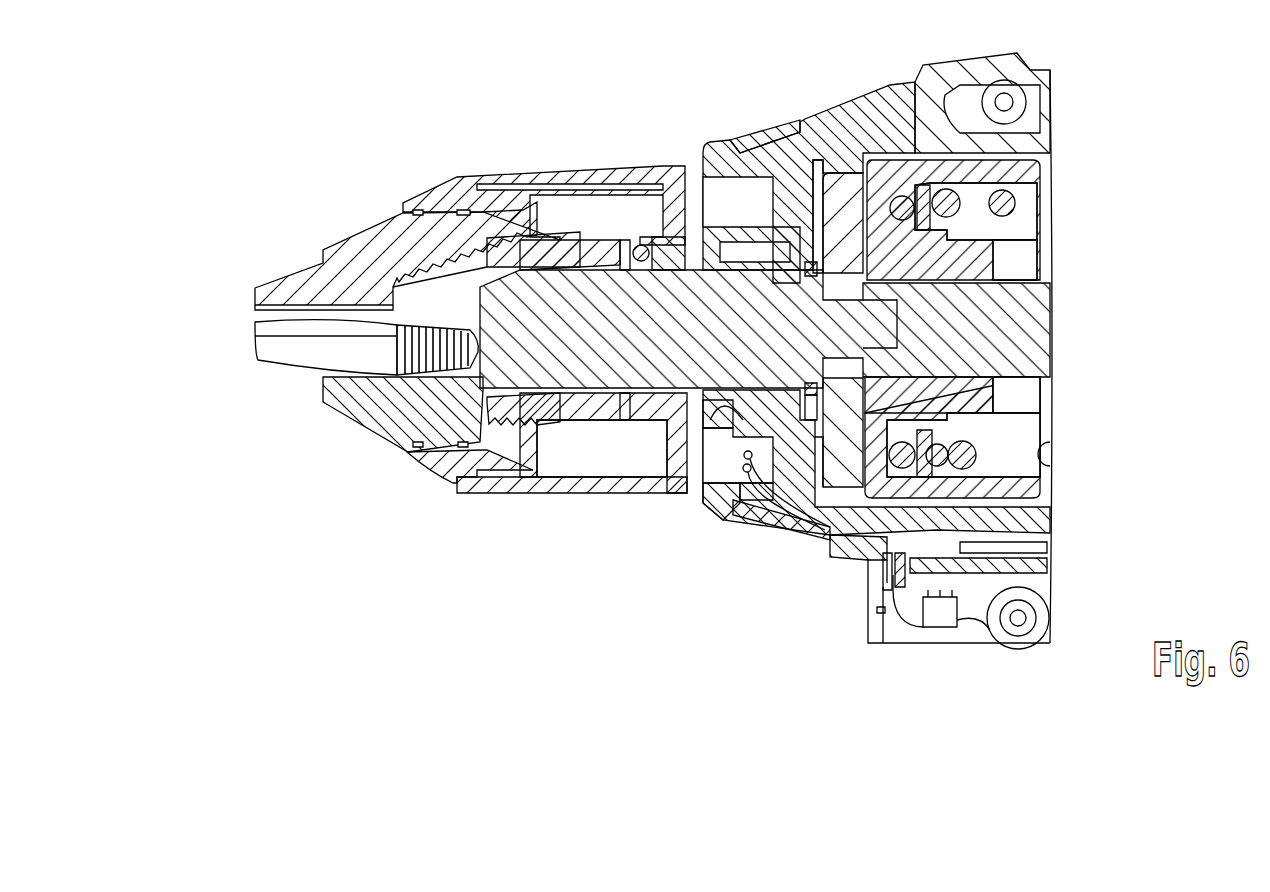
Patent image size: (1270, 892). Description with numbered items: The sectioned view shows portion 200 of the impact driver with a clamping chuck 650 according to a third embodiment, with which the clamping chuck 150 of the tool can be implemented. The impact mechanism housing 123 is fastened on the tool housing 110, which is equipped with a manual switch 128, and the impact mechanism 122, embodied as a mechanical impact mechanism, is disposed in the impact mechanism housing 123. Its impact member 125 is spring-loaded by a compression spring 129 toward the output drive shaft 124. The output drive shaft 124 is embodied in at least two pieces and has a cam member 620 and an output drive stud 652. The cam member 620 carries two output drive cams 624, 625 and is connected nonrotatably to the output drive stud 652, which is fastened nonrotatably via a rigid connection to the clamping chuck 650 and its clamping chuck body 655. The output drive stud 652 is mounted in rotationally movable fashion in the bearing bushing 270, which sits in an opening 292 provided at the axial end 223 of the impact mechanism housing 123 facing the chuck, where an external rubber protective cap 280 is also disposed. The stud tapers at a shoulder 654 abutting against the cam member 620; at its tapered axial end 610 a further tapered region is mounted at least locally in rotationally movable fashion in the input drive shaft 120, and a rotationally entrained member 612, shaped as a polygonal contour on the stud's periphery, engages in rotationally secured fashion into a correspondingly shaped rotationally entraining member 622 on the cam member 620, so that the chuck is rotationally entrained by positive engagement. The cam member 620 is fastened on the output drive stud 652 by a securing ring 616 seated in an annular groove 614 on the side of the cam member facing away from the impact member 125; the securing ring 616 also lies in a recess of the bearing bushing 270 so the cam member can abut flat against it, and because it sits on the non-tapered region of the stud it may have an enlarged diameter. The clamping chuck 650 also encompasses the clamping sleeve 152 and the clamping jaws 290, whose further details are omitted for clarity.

The portion of the impact driver 200 is at (189, 65).
The clamping chuck 150 is at (315, 220).
The output drive stud 652 is at (507, 266).
The clamping chuck body 655 is at (390, 422).
The clamping chuck 650 is at (360, 415).
The clamping jaws 290 is at (250, 330).
The clamping sleeve 152 is at (533, 484).
The output drive shaft 124 is at (708, 330).
The external rubber protective cap 280 is at (763, 137).
The bearing bushing 270 is at (787, 255).
The output drive cam 624 is at (842, 197).
The shoulder 654 is at (866, 185).
The impact mechanism housing 123 is at (890, 92).
The tool housing 110 is at (1013, 88).
The impact mechanism 122 is at (1062, 171).
The impact member 125 is at (1042, 177).
The rotationally entraining member 622 is at (880, 252).
The tapered axial end 610 is at (903, 328).
The input drive shaft 120 is at (1042, 317).
The rotationally entrained member 612 is at (870, 410).
The compression spring 129 is at (1055, 455).
The output drive cam 625 is at (845, 455).
The cam member 620 is at (842, 500).
The annular groove 614 is at (750, 462).
The securing ring 616 is at (809, 386).
The opening 292 is at (694, 504).
The axial end 223 is at (733, 407).
The manual switch 128 is at (877, 610).